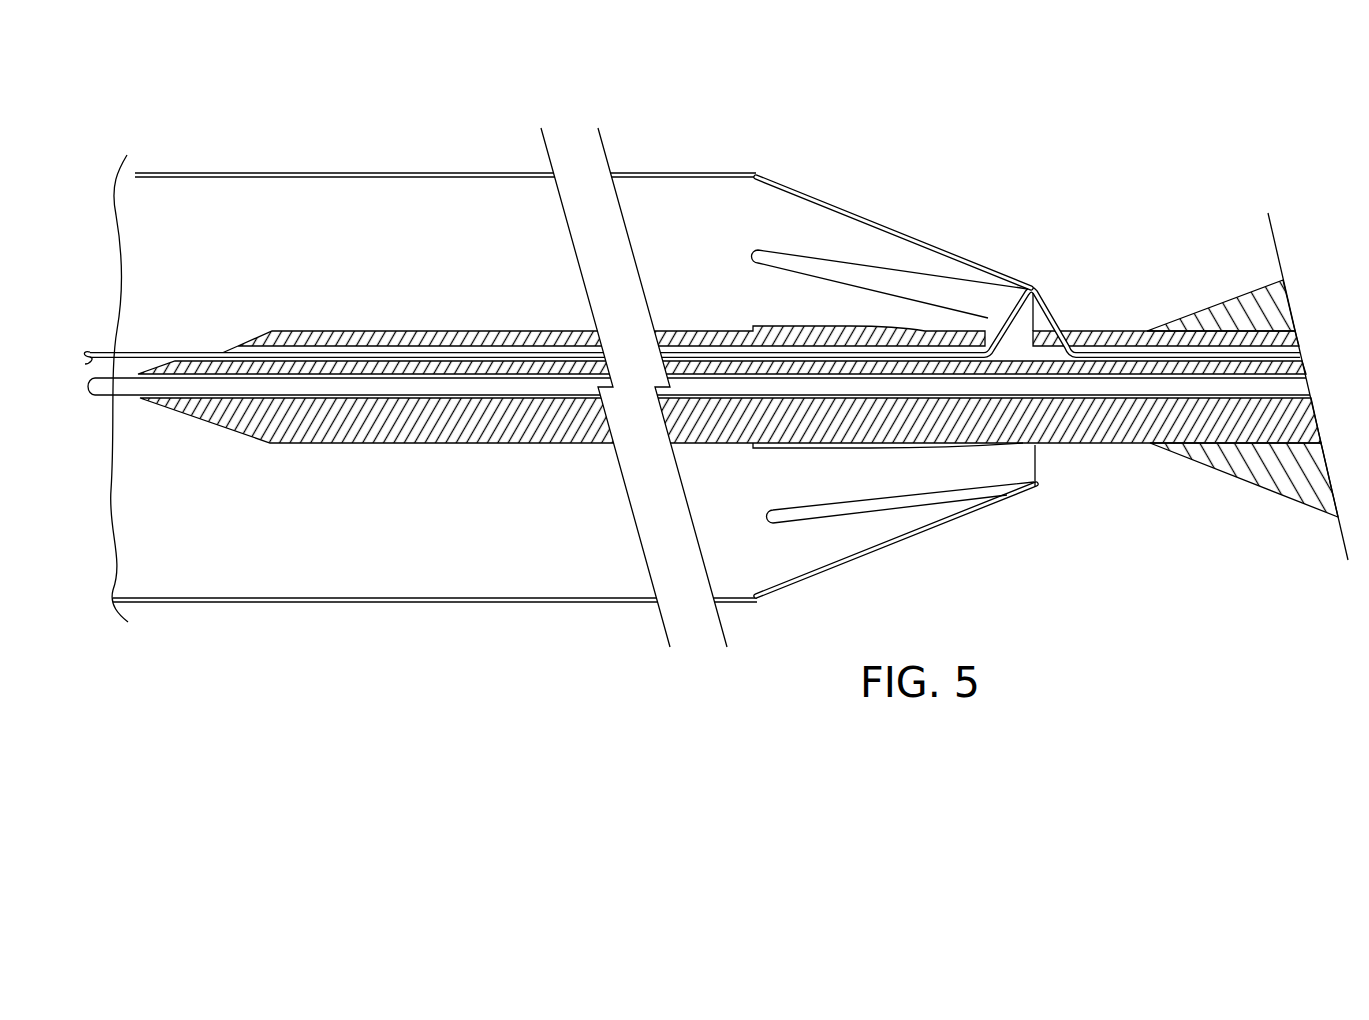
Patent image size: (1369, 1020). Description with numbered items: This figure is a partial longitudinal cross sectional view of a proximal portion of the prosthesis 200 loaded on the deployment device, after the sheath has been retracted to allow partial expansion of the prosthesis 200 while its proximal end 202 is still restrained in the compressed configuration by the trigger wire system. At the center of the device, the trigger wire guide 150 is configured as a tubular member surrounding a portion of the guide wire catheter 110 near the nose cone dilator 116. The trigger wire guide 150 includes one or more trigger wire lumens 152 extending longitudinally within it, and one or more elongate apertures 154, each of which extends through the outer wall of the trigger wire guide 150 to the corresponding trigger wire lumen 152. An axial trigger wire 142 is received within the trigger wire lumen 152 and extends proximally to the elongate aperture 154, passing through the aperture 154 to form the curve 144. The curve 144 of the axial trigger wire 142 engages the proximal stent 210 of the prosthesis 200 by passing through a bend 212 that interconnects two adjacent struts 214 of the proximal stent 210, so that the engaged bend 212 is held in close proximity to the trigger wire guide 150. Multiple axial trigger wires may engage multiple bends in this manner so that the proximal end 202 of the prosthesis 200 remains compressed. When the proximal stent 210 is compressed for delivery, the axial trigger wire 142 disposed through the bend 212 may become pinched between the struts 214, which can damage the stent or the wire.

The prosthesis 200 is at (398, 187).
The proximal stent 210 is at (888, 263).
The struts 214 is at (933, 247).
The bend 212 is at (1027, 285).
The curve 144 is at (1040, 290).
The elongate aperture 154 is at (1040, 333).
The trigger wire lumen 152 is at (227, 347).
The axial trigger wire 142 is at (155, 352).
The guide wire catheter 110 is at (120, 398).
The trigger wire guide 150 is at (1083, 445).
The proximal end 202 is at (1040, 465).
The nose cone dilator 116 is at (1270, 487).